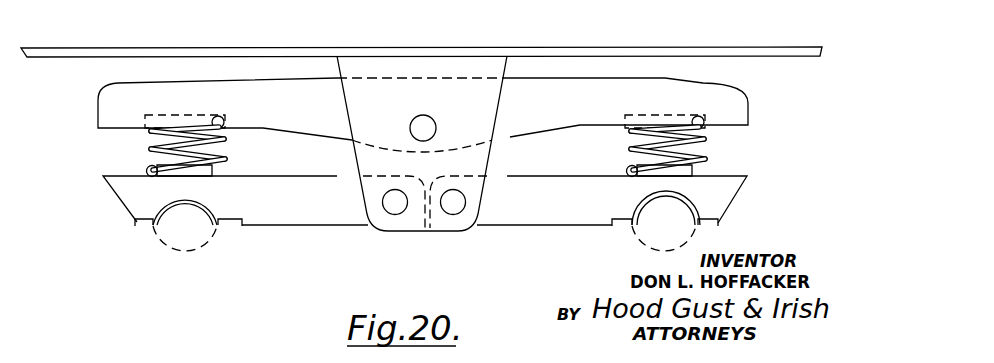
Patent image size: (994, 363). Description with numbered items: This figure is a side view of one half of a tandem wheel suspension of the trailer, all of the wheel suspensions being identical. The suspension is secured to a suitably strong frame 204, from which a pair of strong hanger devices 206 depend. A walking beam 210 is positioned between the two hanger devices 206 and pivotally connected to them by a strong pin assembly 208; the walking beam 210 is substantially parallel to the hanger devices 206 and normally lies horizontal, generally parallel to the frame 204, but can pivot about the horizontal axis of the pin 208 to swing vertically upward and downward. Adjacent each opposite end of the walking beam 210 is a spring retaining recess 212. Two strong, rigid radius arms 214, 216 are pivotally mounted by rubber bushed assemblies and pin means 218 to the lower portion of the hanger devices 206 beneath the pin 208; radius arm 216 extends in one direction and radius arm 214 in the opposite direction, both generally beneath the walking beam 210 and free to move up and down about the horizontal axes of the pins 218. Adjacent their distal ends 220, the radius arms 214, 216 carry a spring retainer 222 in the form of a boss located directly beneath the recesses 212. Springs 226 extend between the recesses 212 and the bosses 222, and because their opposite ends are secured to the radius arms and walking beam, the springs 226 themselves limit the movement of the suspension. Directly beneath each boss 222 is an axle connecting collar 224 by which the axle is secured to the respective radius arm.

The frame 204 is at (534, 47).
The hanger devices 206 is at (421, 232).
The pin assembly 208 is at (423, 127).
The walking beam 210 is at (738, 110).
The spring retaining recess 212 is at (212, 116).
The radius arm 214 is at (290, 220).
The radius arm 216 is at (532, 213).
The pin means 218 is at (450, 206).
The distal ends 220 is at (128, 202).
The spring retainer 222 is at (218, 174).
The axle connecting collar 224 is at (212, 218).
The springs 226 is at (147, 153).